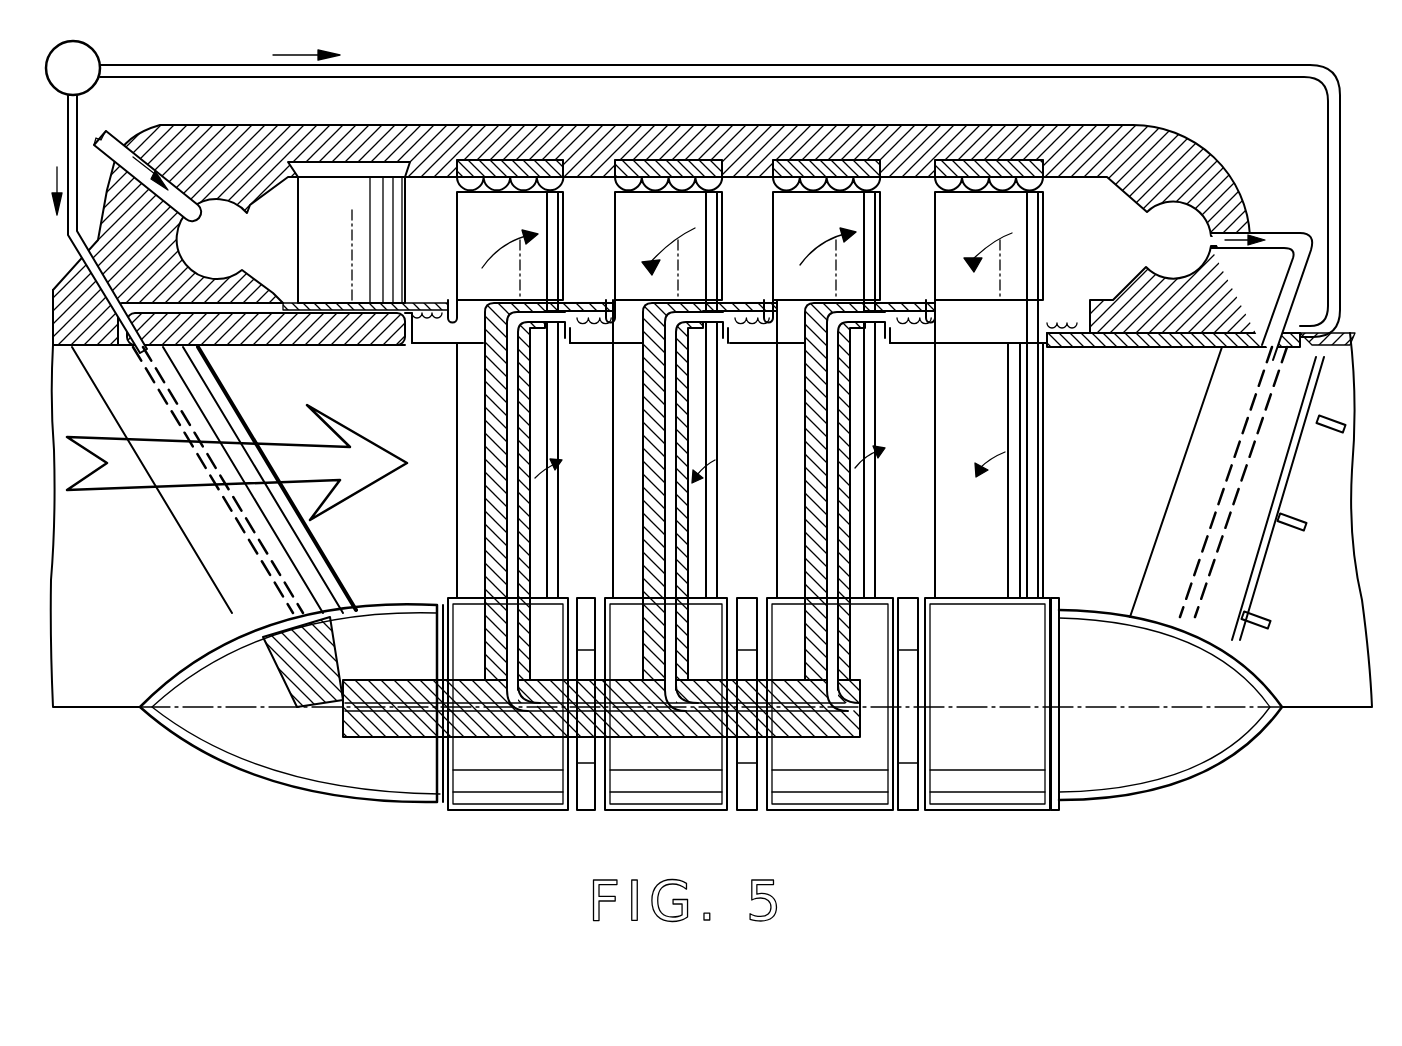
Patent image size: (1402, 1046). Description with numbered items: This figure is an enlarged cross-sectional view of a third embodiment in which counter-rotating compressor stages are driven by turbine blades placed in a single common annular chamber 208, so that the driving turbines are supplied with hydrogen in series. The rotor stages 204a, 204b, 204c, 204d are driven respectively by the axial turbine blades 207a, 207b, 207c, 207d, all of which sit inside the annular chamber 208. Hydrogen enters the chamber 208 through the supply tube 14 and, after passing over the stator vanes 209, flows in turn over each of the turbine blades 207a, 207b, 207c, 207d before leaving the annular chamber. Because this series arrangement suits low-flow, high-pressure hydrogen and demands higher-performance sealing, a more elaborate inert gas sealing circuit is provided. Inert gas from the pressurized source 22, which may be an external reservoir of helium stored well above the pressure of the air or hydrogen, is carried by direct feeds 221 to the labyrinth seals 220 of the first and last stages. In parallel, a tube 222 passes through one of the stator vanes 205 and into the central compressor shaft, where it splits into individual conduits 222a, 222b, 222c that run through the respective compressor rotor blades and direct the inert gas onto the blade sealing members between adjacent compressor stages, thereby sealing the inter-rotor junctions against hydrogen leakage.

The source of pressurized inert gas 22 is at (87, 81).
The supply tube 14 is at (120, 145).
The annular chamber 208 is at (233, 222).
The stator vanes 209 is at (333, 195).
The axial turbine blade 207a is at (497, 210).
The axial turbine blade 207b is at (655, 210).
The axial turbine blade 207c is at (818, 210).
The axial turbine blade 207d is at (968, 215).
The direct feeds 221 is at (1330, 138).
The labyrinth seals 220 is at (410, 330).
The rotor stage 204a is at (470, 388).
The rotor stage 204b is at (630, 497).
The rotor stage 204c is at (870, 420).
The rotor stage 204d is at (1010, 490).
The tube 222 is at (233, 517).
The stator vane 205 is at (227, 580).
The conduit 222a is at (525, 700).
The conduit 222b is at (700, 690).
The conduit 222c is at (843, 690).